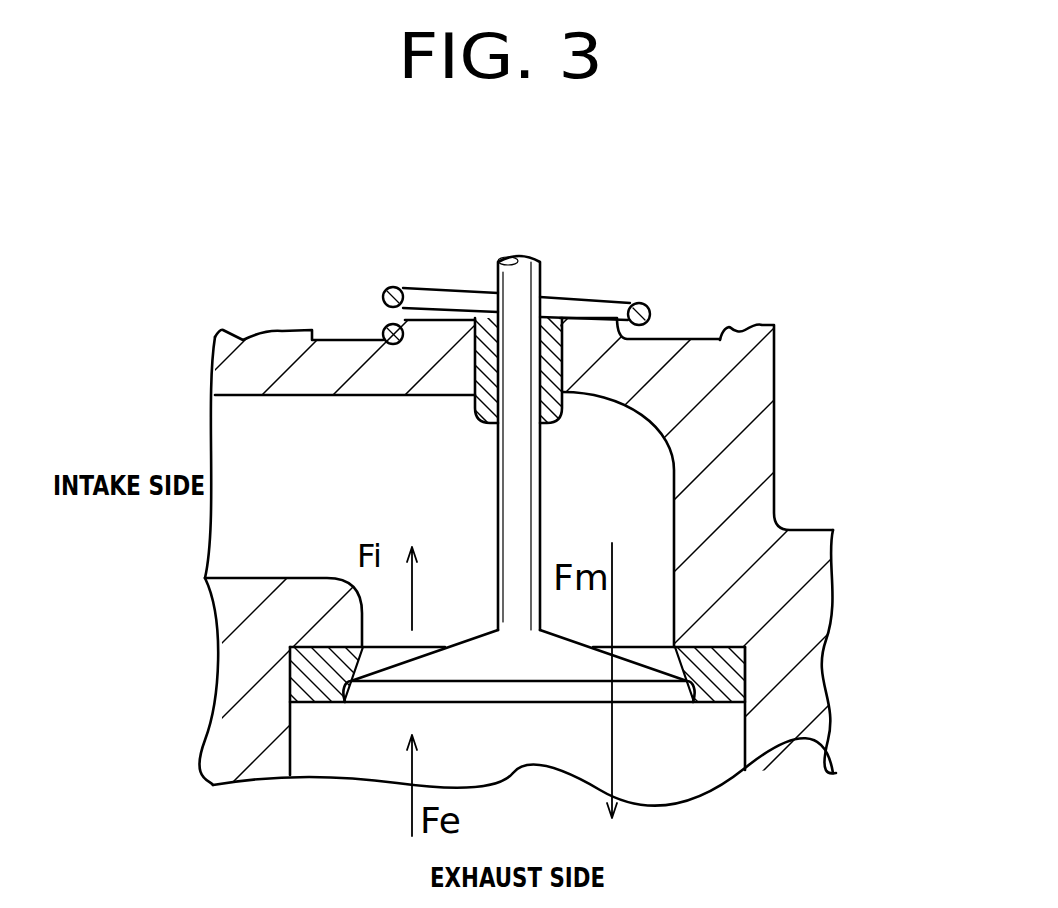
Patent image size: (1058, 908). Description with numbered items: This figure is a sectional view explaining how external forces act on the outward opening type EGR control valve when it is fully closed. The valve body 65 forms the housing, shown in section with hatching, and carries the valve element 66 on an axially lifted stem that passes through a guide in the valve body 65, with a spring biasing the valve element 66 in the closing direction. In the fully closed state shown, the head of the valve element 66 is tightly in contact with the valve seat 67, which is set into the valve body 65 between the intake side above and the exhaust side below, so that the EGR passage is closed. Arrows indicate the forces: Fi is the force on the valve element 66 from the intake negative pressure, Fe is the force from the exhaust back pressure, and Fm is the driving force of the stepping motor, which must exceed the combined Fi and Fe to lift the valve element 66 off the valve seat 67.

The valve body 65 is at (767, 422).
The valve element 66 is at (660, 692).
The valve seat 67 is at (733, 668).